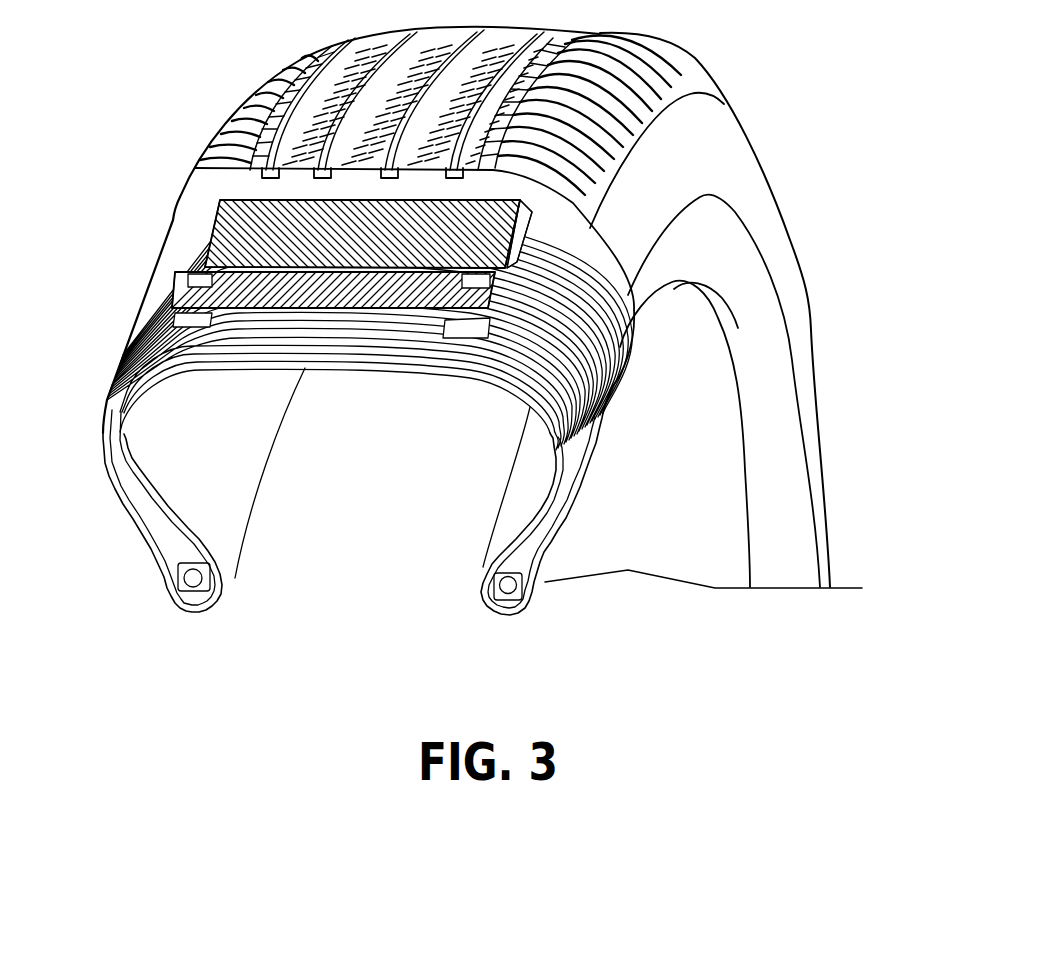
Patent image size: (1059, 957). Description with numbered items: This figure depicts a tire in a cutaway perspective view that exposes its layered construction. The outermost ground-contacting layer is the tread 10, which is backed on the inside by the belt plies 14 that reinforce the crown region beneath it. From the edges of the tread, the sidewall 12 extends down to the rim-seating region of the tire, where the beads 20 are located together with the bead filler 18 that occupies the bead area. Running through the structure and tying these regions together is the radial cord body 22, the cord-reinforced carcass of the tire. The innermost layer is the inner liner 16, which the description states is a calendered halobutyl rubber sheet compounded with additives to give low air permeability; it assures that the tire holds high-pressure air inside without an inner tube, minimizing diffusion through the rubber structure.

The tread 10 is at (307, 110).
The sidewall 12 is at (717, 175).
The belt plies 14 is at (285, 249).
The inner liner 16 is at (130, 400).
The bead filler 18 is at (517, 567).
The beads 20 is at (503, 590).
The radial cord body 22 is at (596, 410).